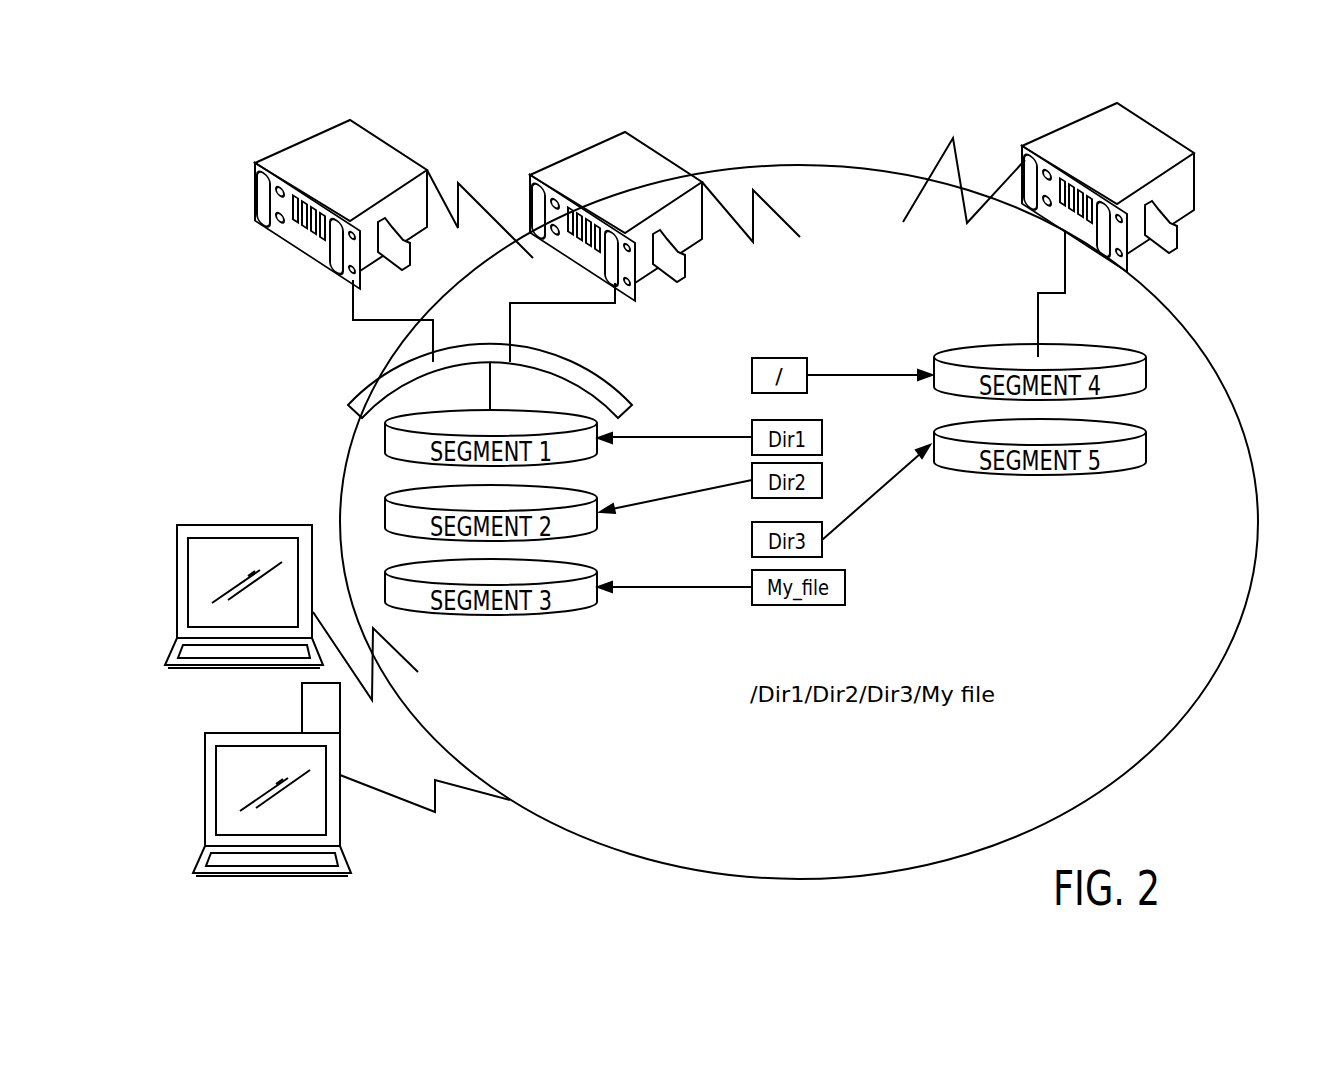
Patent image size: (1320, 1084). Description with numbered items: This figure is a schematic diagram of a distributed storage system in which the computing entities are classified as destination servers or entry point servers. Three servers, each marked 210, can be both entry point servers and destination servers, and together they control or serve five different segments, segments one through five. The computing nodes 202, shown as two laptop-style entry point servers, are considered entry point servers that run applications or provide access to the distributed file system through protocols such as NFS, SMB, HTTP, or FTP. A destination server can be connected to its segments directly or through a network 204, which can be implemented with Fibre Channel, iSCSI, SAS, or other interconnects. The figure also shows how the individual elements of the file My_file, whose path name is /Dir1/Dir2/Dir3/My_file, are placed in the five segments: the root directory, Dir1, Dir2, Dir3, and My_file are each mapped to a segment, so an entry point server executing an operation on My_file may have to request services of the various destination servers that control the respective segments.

The server 210 is at (389, 145).
The network 204 is at (586, 368).
The computing nodes 202 is at (205, 753).